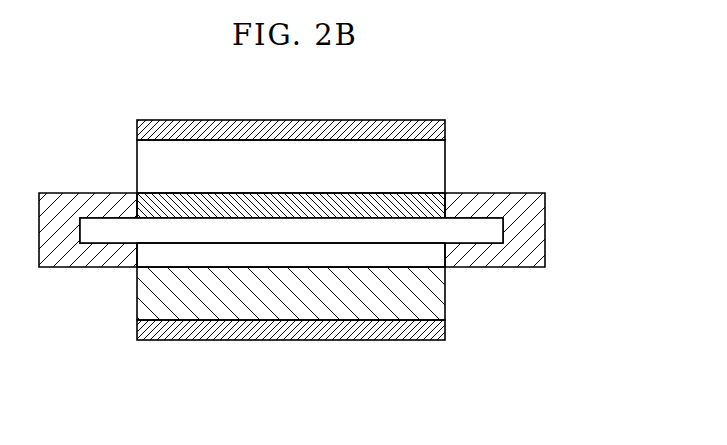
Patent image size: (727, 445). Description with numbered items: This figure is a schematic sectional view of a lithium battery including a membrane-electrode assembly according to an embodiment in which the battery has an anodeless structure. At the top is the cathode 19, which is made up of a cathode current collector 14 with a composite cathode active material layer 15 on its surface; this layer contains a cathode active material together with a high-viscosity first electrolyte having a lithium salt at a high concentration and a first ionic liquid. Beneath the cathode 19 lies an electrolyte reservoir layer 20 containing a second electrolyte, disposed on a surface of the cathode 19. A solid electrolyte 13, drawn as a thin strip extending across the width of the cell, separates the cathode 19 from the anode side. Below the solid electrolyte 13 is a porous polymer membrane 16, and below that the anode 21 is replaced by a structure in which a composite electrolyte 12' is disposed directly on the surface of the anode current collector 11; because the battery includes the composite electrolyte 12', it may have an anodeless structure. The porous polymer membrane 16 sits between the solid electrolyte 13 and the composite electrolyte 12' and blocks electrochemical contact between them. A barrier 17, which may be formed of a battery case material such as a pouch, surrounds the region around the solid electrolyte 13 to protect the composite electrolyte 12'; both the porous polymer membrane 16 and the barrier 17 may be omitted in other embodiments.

The anode current collector 11 is at (440, 327).
The composite electrolyte 12' is at (373, 295).
The solid electrolyte 13 is at (472, 234).
The cathode current collector 14 is at (430, 128).
The composite cathode active material layer 15 is at (430, 163).
The porous polymer membrane 16 is at (193, 257).
The barrier 17 is at (535, 252).
The cathode 19 is at (615, 125).
The electrolyte reservoir layer 20 is at (430, 207).
The anode 21 is at (615, 307).